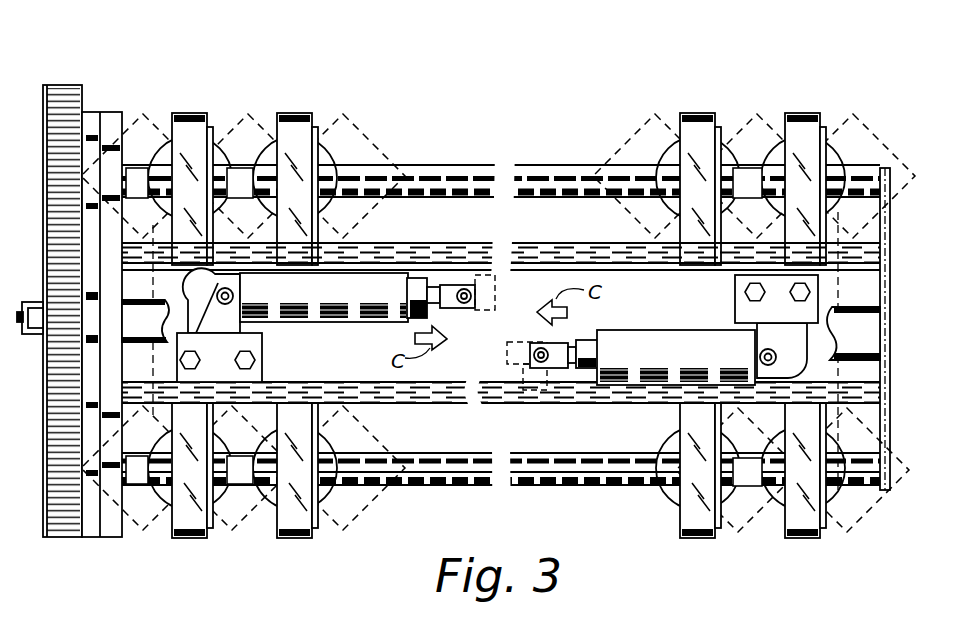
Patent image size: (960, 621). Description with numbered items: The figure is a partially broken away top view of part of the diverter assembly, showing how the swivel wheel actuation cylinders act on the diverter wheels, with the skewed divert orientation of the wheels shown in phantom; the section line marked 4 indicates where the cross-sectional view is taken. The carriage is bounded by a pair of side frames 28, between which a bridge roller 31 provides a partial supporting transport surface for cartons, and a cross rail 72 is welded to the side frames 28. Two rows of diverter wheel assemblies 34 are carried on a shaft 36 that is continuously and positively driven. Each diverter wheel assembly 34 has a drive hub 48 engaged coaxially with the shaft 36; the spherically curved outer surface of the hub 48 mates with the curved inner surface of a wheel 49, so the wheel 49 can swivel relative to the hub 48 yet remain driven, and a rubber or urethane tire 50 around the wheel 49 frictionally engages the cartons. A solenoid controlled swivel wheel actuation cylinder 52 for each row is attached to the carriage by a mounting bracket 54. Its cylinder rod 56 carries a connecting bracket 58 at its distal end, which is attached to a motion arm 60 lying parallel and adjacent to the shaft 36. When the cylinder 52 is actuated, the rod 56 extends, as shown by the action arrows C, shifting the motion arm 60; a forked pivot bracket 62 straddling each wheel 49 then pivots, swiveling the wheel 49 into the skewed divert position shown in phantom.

The section line 4- 4 is at (102, 25).
The side frame 28 is at (105, 300).
The bridge roller 31 is at (153, 360).
The diverter wheel assembly 34 is at (344, 122).
The shaft 36 is at (602, 187).
The drive hub 48 is at (328, 164).
The wheel 49 is at (717, 124).
The tire 50 is at (295, 128).
The swivel wheel actuation cylinder 52 is at (667, 356).
The mounting bracket 54 is at (256, 351).
The cylinder rod 56 is at (443, 292).
The connecting bracket 58 is at (459, 288).
The motion arm 60 is at (558, 250).
The forked pivot bracket 62 is at (330, 432).
The cross rail 72 is at (168, 258).